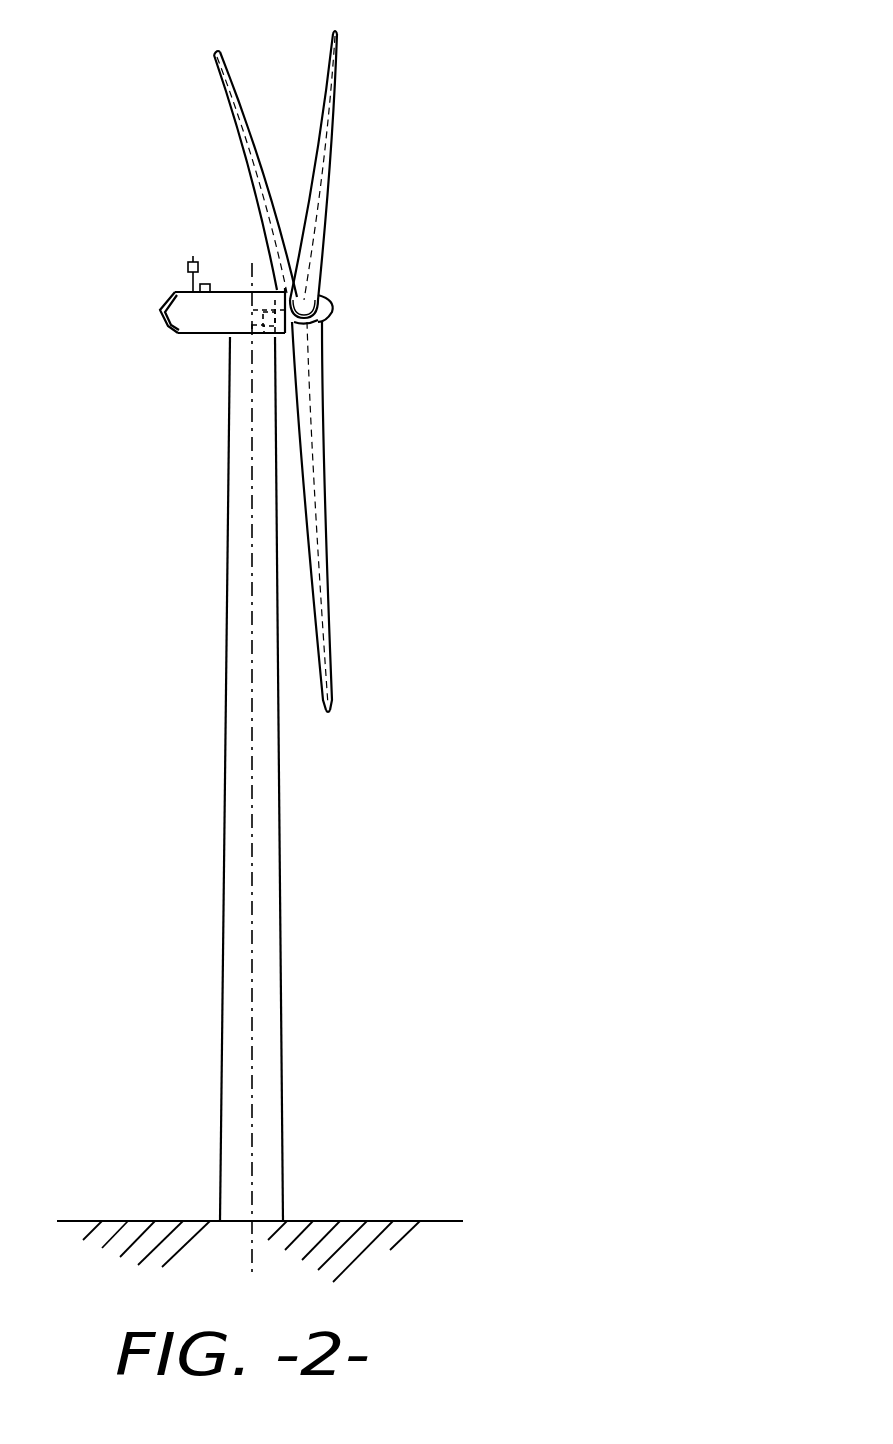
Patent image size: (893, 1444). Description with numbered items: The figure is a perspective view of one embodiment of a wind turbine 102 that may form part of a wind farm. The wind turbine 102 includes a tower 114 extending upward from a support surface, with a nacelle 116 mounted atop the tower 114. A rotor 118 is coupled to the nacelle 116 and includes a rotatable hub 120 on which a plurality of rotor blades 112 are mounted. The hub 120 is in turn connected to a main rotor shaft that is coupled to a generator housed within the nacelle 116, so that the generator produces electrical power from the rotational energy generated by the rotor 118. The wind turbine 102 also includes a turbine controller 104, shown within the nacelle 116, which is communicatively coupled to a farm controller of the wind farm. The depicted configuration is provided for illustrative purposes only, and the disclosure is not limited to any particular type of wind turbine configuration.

The wind turbine 102 is at (462, 117).
The turbine controller 104 is at (283, 298).
The rotor blades 112 is at (325, 78).
The tower 114 is at (223, 900).
The nacelle 116 is at (207, 338).
The rotor 118 is at (350, 290).
The rotatable hub 120 is at (335, 313).